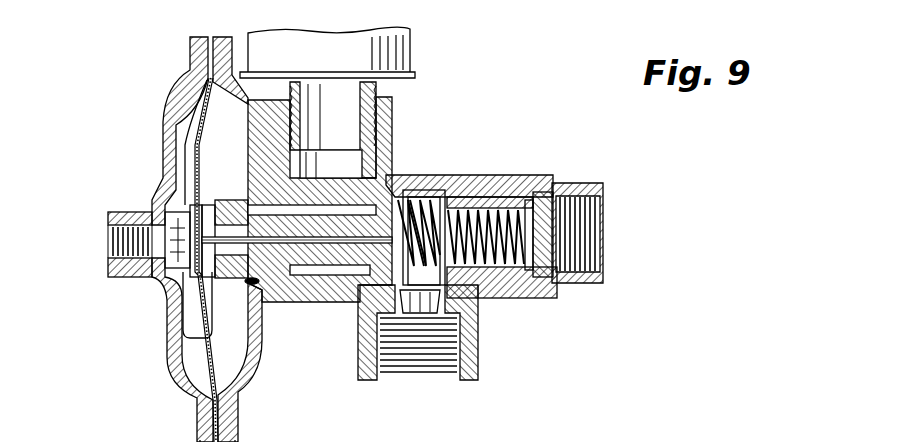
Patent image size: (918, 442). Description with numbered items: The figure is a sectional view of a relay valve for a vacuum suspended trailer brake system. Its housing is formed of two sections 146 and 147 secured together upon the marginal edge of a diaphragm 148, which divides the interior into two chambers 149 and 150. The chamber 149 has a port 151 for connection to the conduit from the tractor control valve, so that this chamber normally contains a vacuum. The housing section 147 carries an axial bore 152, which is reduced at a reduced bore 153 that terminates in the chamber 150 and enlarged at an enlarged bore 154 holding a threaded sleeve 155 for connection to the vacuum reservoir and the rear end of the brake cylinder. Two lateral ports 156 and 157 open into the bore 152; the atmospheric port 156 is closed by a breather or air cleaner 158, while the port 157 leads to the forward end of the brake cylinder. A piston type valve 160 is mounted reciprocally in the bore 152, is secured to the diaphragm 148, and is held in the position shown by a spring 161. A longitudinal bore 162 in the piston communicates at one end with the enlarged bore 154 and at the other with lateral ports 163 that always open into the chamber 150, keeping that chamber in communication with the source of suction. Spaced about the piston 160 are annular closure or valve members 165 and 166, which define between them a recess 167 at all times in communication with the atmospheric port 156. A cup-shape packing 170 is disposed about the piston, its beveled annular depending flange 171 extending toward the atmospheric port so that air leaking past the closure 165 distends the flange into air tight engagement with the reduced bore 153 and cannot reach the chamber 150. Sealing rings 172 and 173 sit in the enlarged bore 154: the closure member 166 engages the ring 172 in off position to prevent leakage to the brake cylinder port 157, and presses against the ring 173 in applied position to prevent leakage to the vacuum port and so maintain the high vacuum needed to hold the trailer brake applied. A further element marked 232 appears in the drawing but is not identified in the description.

The housing section 146 is at (186, 74).
The housing section 147 is at (532, 170).
The diaphragm 148 is at (200, 97).
The chamber 149 is at (189, 118).
The chamber 150 is at (253, 386).
The port 151 is at (104, 220).
The axial bore 152 is at (445, 172).
The reduced bore 153 is at (346, 270).
The enlarged bore 154 is at (422, 180).
The threaded sleeve 155 is at (597, 284).
The lateral port 156 is at (388, 132).
The lateral port 157 is at (480, 323).
The breather or air cleaner 158 is at (410, 44).
The piston type valve 160 is at (368, 262).
The spring 161 is at (548, 280).
The bore 162 is at (320, 264).
The lateral ports 163 is at (230, 200).
The closure or valve member 165 is at (278, 205).
The closure or valve member 166 is at (368, 380).
The recess 167 is at (360, 158).
The cup-shape packing 170 is at (255, 286).
The annular depending flange 171 is at (314, 268).
The sealing ring 172 is at (432, 160).
The sealing ring 173 is at (465, 176).
The stem 232 is at (172, 435).